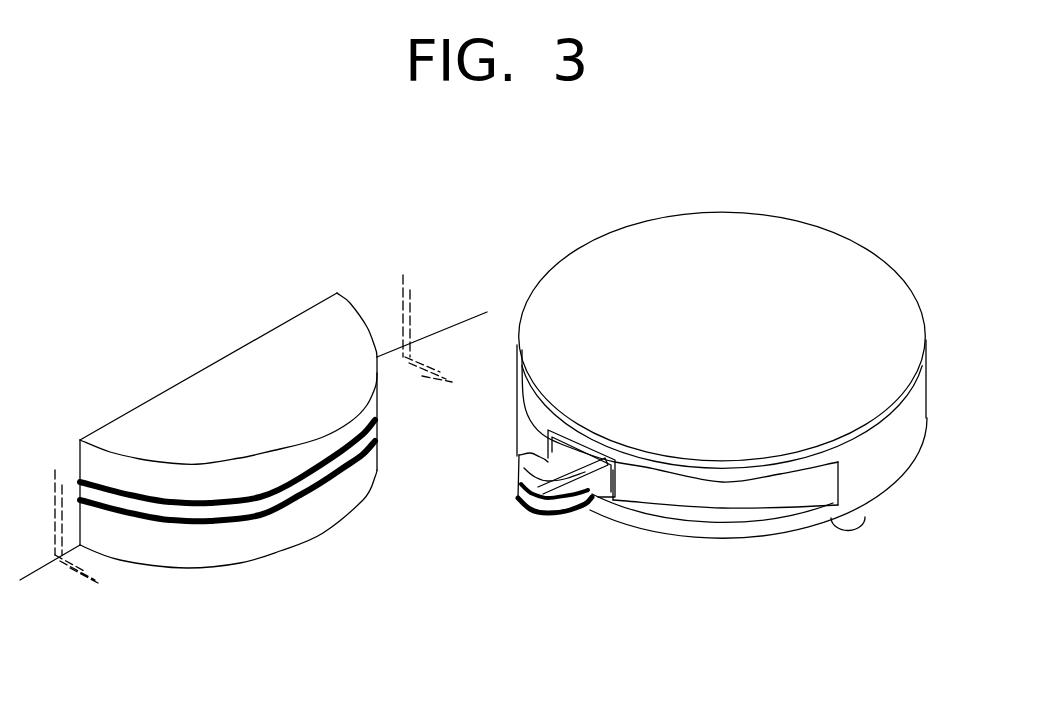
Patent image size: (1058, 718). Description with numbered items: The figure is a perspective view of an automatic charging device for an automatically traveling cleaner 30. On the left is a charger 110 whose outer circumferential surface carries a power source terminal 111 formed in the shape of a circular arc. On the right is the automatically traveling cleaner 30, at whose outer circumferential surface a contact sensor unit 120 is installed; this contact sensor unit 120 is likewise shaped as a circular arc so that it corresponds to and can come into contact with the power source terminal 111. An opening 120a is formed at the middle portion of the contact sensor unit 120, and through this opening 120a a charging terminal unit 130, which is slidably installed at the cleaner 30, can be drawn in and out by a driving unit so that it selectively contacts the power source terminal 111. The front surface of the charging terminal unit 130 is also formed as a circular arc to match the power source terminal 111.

The automatically traveling cleaner 30 is at (853, 243).
The charger 110 is at (163, 540).
The power source terminal 111 is at (233, 520).
The contact sensor unit 120 is at (678, 507).
The opening 120a is at (607, 488).
The charging terminal unit 130 is at (560, 518).